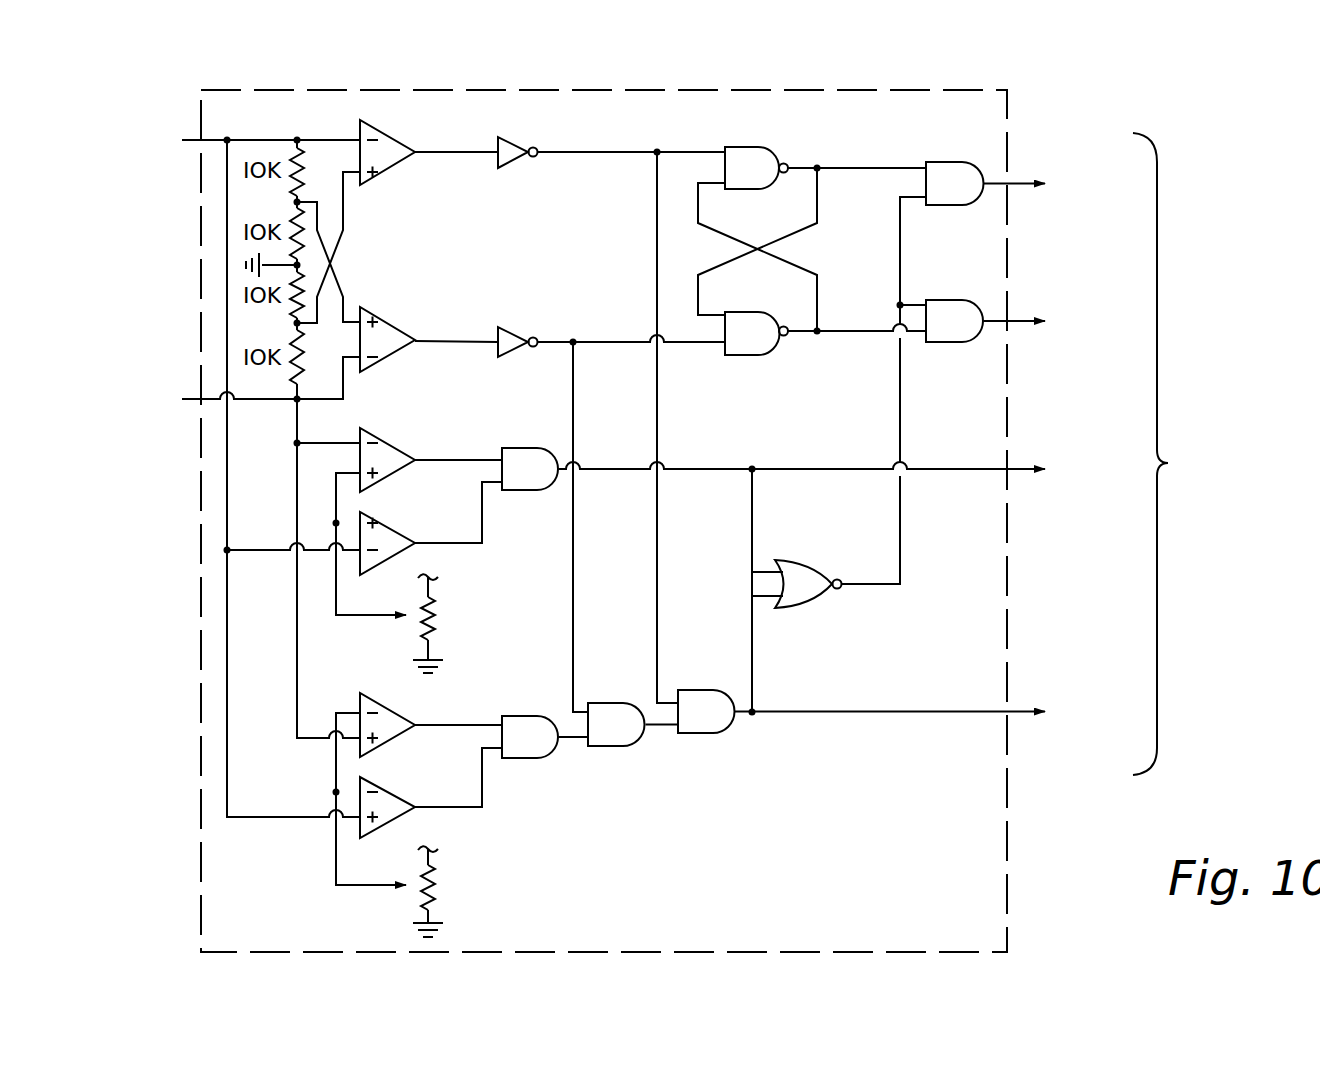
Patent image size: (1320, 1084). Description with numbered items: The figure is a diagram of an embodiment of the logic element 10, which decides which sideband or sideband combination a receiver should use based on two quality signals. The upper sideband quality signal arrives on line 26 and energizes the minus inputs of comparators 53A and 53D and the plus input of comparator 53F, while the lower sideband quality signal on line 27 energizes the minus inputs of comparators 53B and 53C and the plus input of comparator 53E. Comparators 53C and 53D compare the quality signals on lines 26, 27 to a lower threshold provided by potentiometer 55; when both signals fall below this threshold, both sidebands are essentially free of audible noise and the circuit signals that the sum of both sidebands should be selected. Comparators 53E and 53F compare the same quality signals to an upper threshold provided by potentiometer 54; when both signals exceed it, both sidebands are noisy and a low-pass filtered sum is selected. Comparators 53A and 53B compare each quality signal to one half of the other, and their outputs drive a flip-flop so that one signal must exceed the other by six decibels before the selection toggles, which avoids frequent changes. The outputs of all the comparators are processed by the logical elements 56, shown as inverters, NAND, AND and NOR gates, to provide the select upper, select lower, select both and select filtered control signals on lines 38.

The logic element 10 is at (1007, 118).
The line 26 is at (151, 132).
The line 27 is at (149, 392).
The lines 38 is at (1128, 454).
The comparator 53A is at (397, 171).
The comparator 53B is at (394, 318).
The comparator 53C is at (378, 437).
The comparator 53D is at (373, 573).
The comparator 53E is at (378, 690).
The comparator 53F is at (377, 838).
The potentiometer 54 is at (500, 866).
The potentiometer 55 is at (485, 596).
The logical elements 56 is at (515, 138).